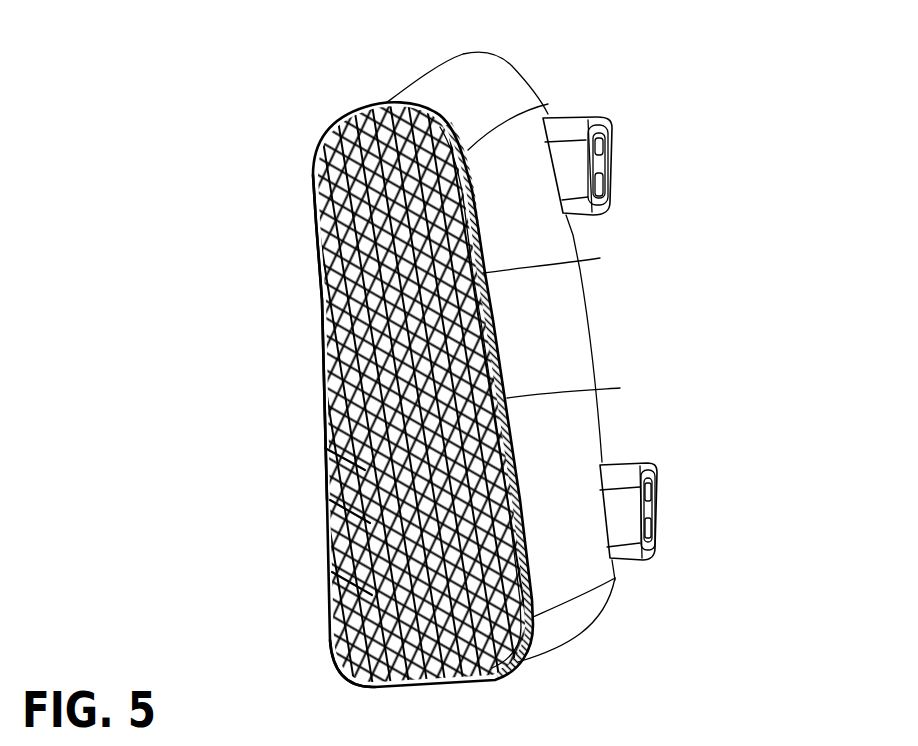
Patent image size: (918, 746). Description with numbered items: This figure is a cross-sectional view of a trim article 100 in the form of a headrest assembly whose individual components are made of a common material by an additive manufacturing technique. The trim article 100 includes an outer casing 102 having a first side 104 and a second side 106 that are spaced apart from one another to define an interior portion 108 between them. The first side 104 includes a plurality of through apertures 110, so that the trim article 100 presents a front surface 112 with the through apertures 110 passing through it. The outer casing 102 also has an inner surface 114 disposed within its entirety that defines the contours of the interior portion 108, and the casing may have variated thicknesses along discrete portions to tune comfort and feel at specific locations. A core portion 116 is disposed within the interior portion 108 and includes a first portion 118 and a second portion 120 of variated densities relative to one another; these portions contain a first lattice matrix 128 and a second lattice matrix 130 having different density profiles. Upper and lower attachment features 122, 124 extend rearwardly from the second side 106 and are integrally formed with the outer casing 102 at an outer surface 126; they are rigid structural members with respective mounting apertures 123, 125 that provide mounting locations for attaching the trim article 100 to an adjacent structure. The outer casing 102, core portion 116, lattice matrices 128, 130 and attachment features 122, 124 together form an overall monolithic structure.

The trim article 100 is at (547, 55).
The outer casing 102 is at (463, 88).
The first side 104 is at (322, 300).
The second side 106 is at (543, 314).
The interior portion 108 is at (316, 222).
The through apertures 110 is at (312, 428).
The front surface 112 is at (330, 500).
The inner surface 114 is at (332, 572).
The core portion 116 is at (528, 653).
The first portion 118 is at (350, 672).
The second portion 120 is at (620, 388).
The upper attachment feature 122 is at (567, 130).
The mounting aperture 123 is at (607, 147).
The lower attachment feature 124 is at (617, 520).
The mounting aperture 125 is at (647, 490).
The outer surface 126 is at (577, 610).
The first lattice matrix 128 is at (325, 448).
The second lattice matrix 130 is at (600, 258).